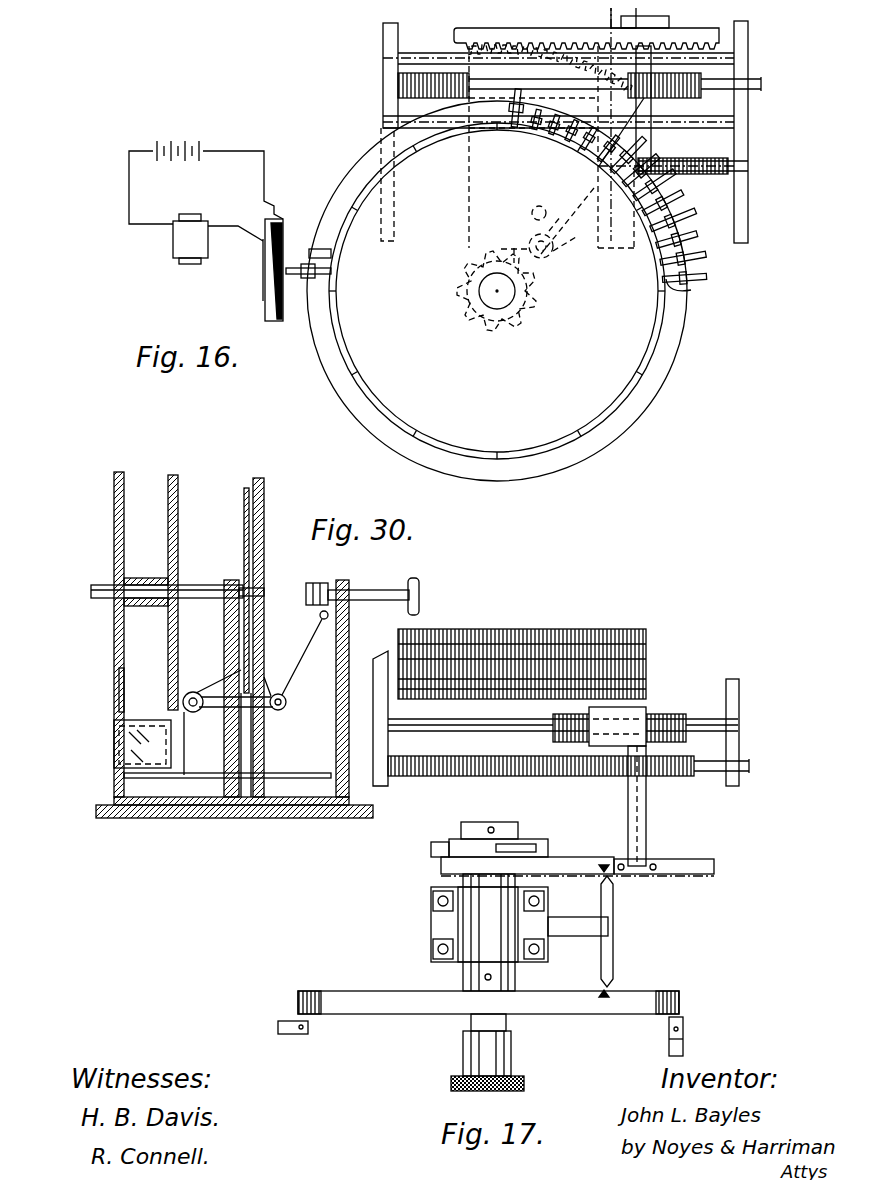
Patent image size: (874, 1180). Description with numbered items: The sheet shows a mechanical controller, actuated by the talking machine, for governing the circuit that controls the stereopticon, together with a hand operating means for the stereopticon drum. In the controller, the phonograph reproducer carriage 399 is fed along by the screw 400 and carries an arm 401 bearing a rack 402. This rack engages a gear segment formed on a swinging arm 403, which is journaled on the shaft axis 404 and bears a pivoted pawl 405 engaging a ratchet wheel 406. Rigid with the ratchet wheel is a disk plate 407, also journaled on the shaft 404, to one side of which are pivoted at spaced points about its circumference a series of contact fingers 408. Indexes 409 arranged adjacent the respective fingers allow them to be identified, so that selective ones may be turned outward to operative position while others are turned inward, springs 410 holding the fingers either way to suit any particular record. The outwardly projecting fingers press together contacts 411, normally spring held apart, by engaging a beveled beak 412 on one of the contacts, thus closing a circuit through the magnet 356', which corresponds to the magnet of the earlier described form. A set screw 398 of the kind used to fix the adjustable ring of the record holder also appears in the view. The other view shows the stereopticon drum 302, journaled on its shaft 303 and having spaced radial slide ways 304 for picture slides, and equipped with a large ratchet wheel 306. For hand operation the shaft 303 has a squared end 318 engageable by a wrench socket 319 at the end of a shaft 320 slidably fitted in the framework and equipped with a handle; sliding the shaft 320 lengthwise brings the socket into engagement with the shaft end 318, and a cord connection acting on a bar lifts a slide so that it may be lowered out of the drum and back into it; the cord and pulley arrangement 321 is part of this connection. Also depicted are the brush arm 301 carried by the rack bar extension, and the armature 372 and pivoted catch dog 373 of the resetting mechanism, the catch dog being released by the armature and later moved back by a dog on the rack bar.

In FIG. 16, the magnet 356' is at (198, 222).
In FIG. 17, the set screw 398 is at (672, 712).
In FIG. 16, the phonograph reproducer carriage 399 is at (643, 68).
In FIG. 16, the feed screw 400 is at (400, 75).
In FIG. 17, the feed screw 400 is at (577, 778).
In FIG. 16, the arm 401 is at (643, 24).
In FIG. 17, the arm 401 is at (640, 817).
In FIG. 16, the rack 402 is at (707, 27).
In FIG. 16, the swinging arm 403 is at (463, 182).
In FIG. 17, the swinging arm 403 is at (577, 860).
In FIG. 16, the shaft axis 404 is at (513, 293).
In FIG. 17, the shaft axis 404 is at (487, 822).
In FIG. 16, the pivoted pawl 405 is at (513, 247).
In FIG. 17, the pivoted pawl 405 is at (515, 843).
In FIG. 16, the ratchet wheel 406 is at (455, 295).
In FIG. 17, the ratchet wheel 406 is at (445, 848).
In FIG. 16, the disk plate 407 is at (360, 403).
In FIG. 17, the disk plate 407 is at (393, 979).
In FIG. 16, the contact fingers 408 is at (678, 190).
In FIG. 17, the contact fingers 408 is at (668, 1045).
In FIG. 16, the indexes 409 is at (362, 365).
In FIG. 17, the indexes 409 is at (606, 931).
In FIG. 16, the springs 410 is at (692, 288).
In FIG. 17, the springs 410 is at (315, 1023).
In FIG. 16, the contacts 411 is at (272, 324).
In FIG. 16, the beveled beak 412 is at (283, 286).
In FIG. 30, the brush arm 301 is at (166, 502).
In FIG. 30, the rotatable drum 302 is at (167, 537).
In FIG. 30, the shaft 303 is at (205, 585).
In FIG. 30, the radial slide ways 304 is at (170, 692).
In FIG. 30, the ratchet wheel 306 is at (120, 472).
In FIG. 30, the squared end 318 is at (265, 592).
In FIG. 30, the wrench socket 319 is at (335, 590).
In FIG. 30, the shaft 320 is at (395, 590).
In FIG. 30, the pulley rod 321 is at (285, 695).
In FIG. 30, the armature 372 is at (203, 800).
In FIG. 30, the catch dog 373 is at (155, 745).